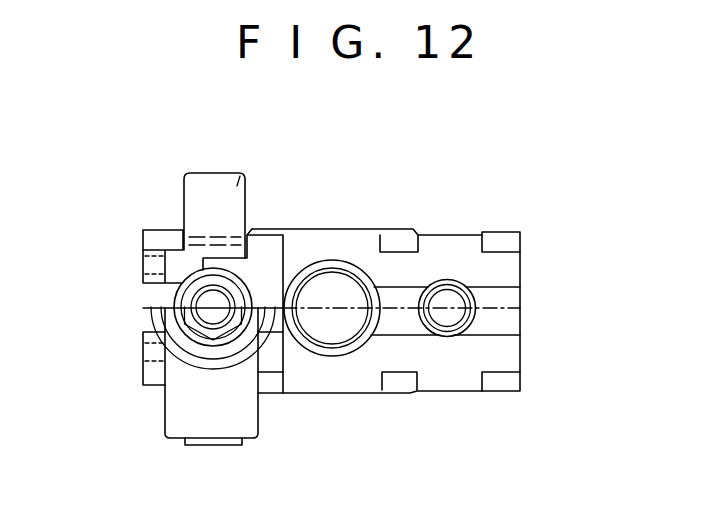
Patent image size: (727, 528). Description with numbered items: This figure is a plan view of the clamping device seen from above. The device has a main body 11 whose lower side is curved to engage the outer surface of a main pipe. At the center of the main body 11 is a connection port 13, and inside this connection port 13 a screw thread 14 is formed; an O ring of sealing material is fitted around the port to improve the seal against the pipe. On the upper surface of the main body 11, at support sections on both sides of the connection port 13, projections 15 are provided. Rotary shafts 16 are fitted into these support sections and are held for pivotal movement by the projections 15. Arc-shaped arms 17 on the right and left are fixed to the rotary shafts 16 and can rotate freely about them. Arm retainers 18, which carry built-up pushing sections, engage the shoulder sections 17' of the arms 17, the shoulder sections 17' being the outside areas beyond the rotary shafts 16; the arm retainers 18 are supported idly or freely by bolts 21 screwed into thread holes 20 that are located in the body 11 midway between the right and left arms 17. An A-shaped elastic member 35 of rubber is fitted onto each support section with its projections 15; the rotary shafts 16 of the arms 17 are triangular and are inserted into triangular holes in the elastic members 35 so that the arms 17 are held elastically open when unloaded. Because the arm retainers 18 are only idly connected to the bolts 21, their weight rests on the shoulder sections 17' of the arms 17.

The main body 11 is at (333, 242).
The connection port 13 is at (350, 275).
The screw thread 14 is at (333, 337).
The projections 15 is at (507, 268).
The rotary shafts 16 is at (150, 267).
The arc-shaped arms 17 is at (198, 307).
The shoulder sections 17' is at (264, 147).
The arm retainers 18 is at (192, 410).
The thread holes 20 is at (447, 298).
The bolts 21 is at (222, 325).
The A-shaped elastic member 35 is at (150, 255).